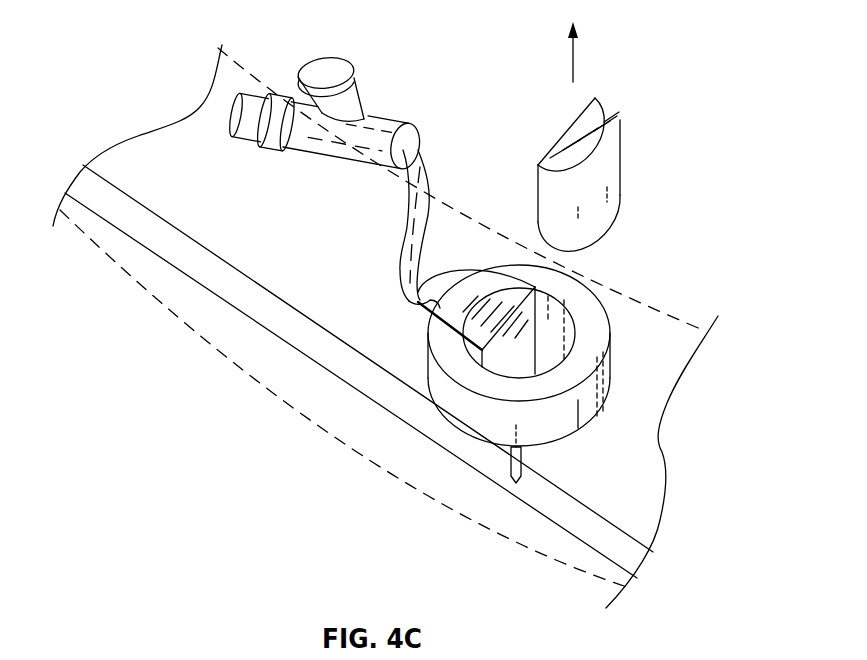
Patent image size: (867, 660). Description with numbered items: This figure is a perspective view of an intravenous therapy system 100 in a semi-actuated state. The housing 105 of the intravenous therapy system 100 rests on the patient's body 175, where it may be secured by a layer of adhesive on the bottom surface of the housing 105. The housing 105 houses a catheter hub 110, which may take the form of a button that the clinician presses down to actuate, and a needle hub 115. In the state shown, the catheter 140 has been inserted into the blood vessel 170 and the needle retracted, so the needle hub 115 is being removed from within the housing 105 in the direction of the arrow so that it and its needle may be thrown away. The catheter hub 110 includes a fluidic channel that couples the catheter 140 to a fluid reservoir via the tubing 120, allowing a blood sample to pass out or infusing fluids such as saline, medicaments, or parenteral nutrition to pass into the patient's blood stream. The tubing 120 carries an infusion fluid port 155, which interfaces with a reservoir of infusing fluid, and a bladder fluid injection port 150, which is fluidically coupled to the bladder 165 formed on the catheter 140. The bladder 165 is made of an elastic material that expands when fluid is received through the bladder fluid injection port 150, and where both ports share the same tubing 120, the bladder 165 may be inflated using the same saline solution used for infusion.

The intravenous therapy system 100 is at (229, 81).
The housing 105 is at (585, 312).
The catheter hub 110 is at (420, 303).
The needle hub 115 is at (612, 170).
The tubing 120 is at (421, 160).
The catheter 140 is at (521, 463).
The bladder fluid injection port 150 is at (358, 108).
The infusion fluid port 155 is at (240, 132).
The bladder 165 is at (501, 481).
The blood vessel 170 is at (553, 494).
The patient's body 175 is at (677, 320).